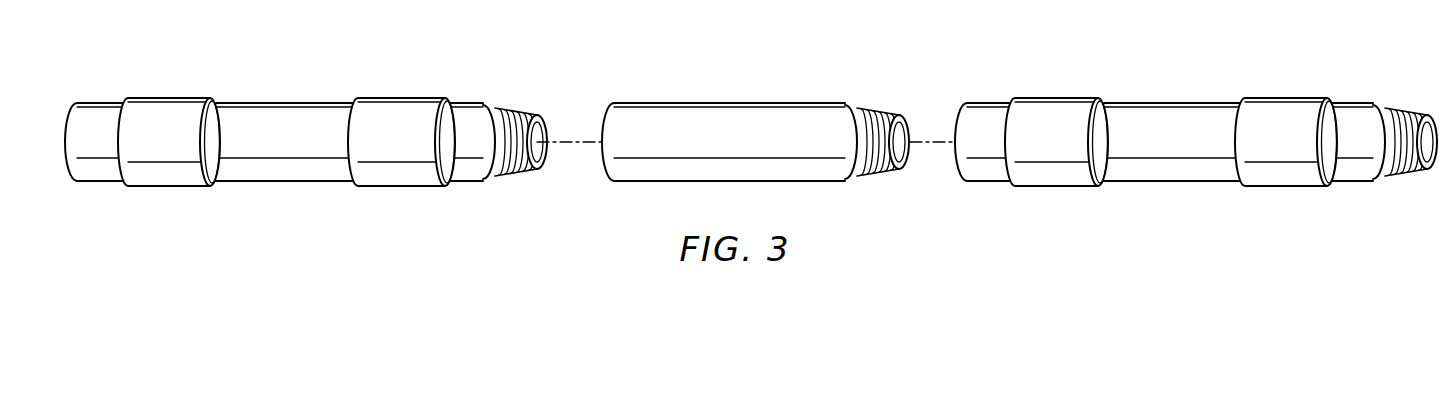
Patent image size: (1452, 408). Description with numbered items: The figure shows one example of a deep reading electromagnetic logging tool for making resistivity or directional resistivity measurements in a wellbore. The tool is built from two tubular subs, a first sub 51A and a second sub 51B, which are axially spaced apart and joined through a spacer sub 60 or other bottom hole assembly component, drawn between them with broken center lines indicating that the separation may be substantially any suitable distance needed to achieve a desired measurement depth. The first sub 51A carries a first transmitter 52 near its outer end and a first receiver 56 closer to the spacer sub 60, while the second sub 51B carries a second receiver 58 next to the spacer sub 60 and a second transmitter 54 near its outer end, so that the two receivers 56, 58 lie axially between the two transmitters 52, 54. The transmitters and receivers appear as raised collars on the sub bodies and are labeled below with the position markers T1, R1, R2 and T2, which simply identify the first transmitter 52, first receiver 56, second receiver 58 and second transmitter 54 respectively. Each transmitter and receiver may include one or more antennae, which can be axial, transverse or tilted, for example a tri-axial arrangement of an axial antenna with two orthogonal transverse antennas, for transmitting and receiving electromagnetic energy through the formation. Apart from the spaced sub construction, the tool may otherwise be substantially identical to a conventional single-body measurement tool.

The first sub 51A is at (273, 103).
The second sub 51B is at (1153, 103).
The first transmitter 52 is at (172, 98).
The second transmitter 54 is at (1297, 97).
The first receiver 56 is at (410, 98).
The second receiver 58 is at (1058, 97).
The spacer sub 60 is at (737, 102).
The first tool joint location T1 is at (175, 210).
The second tool joint location T2 is at (1294, 210).
The first collar location R1 is at (406, 210).
The second collar location R2 is at (1063, 210).